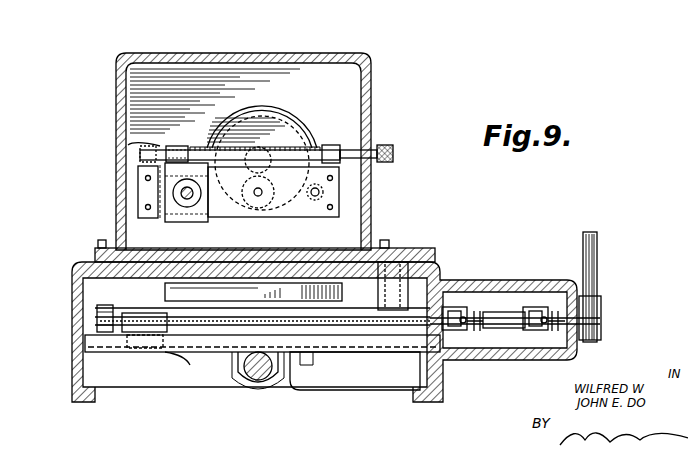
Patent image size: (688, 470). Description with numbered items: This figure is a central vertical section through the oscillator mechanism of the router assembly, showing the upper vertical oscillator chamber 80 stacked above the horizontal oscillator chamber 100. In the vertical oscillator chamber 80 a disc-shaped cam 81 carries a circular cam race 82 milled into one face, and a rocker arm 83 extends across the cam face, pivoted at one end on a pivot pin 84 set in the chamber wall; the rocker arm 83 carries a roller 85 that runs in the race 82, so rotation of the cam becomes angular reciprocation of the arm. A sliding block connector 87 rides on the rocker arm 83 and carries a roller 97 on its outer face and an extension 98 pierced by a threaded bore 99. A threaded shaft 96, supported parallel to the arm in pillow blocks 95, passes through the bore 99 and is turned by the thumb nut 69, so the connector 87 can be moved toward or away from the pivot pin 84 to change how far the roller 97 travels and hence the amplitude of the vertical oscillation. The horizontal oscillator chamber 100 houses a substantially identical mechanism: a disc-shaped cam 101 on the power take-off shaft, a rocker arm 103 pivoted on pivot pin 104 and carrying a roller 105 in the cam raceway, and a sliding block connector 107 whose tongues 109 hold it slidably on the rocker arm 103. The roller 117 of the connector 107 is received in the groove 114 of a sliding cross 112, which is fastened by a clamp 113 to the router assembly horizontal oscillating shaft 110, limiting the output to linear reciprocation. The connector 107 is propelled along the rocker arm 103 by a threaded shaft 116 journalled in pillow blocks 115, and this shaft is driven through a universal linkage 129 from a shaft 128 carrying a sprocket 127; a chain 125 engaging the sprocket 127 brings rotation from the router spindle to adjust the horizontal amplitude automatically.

The thumb nut 69 is at (394, 155).
The vertical oscillator chamber 80 is at (350, 108).
The disc-shaped cam 81 is at (244, 118).
The circular cam race 82 is at (278, 123).
The rocker arm 83 is at (300, 216).
The pivot pin 84 is at (320, 192).
The roller 85 is at (277, 208).
The sliding block connector 87 is at (170, 196).
The pillow blocks 95 is at (140, 153).
The threaded shaft 96 is at (207, 148).
The roller 97 is at (186, 204).
The extension 98 is at (128, 145).
The threaded bore 99 is at (178, 148).
The horizontal oscillator chamber 100 is at (85, 268).
The disc-shaped cam 101 is at (228, 293).
The rocker arm 103 is at (80, 292).
The pivot pin 104 is at (432, 282).
The roller 105 is at (232, 302).
The sliding block connector 107 is at (186, 352).
The tongues 109 is at (151, 312).
The router assembly horizontal oscillating shaft 110 is at (244, 385).
The sliding cross 112 is at (336, 353).
The clamp 113 is at (270, 375).
The groove 114 is at (166, 362).
The pillow blocks 115 is at (88, 341).
The threaded shaft 116 is at (379, 327).
The roller 117 is at (118, 350).
The chain 125 is at (598, 268).
The sprocket 127 is at (601, 320).
The shaft 128 is at (577, 333).
The universal linkage 129 is at (511, 308).